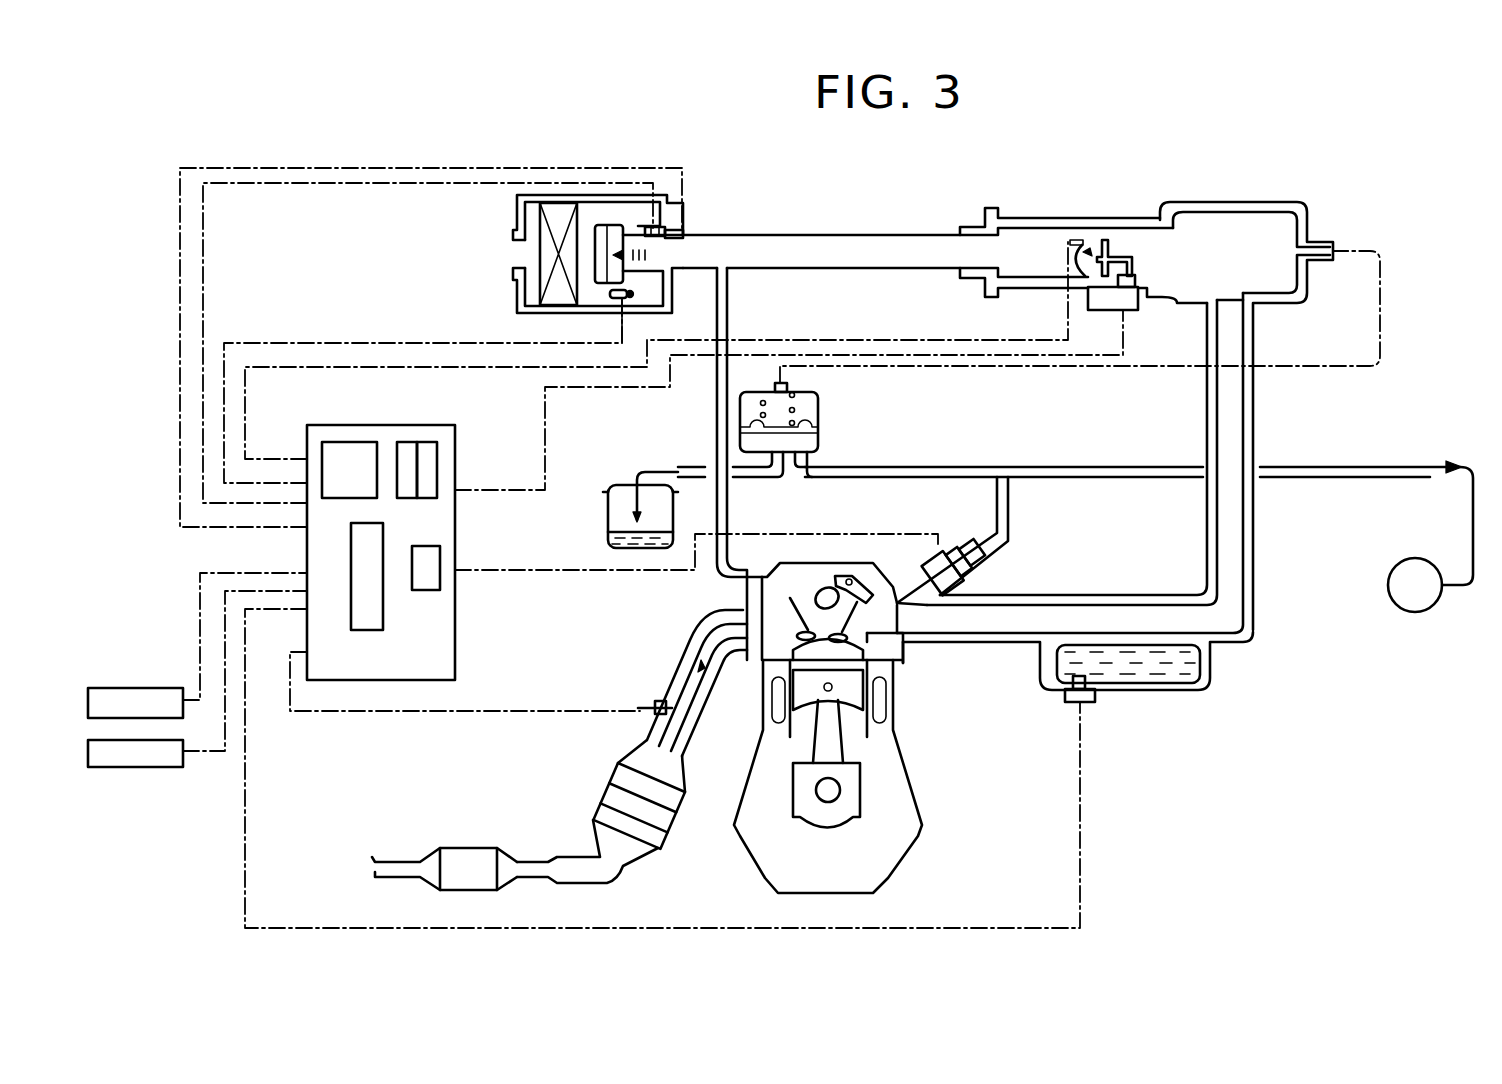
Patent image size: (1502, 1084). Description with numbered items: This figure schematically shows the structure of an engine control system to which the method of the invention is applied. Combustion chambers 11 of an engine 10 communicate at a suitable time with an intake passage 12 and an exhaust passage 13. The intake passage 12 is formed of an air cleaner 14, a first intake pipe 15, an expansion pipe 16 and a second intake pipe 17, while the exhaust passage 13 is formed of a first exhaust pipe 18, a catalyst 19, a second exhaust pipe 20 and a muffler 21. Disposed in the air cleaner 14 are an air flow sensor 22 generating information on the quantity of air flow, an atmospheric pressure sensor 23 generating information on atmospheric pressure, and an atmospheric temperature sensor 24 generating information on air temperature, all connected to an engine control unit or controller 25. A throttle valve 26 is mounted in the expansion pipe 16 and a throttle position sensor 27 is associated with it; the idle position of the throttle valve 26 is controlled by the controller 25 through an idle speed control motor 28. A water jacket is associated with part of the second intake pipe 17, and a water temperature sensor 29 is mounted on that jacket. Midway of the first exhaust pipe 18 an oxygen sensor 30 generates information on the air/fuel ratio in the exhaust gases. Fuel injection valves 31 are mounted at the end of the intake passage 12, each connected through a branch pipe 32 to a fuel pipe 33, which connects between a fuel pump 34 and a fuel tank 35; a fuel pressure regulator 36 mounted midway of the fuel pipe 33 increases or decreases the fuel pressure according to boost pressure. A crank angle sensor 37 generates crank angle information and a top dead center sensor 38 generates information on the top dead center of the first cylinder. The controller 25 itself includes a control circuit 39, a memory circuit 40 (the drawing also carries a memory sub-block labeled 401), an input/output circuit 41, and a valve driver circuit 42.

The engine 10 is at (914, 778).
The combustion chambers 11 is at (873, 662).
The intake passage 12 is at (1044, 630).
The exhaust passage 13 is at (690, 647).
The air cleaner 14 is at (513, 222).
The first intake pipe 15 is at (888, 236).
The expansion pipe 16 is at (1238, 202).
The second intake pipe 17 is at (1120, 596).
The first exhaust pipe 18 is at (712, 612).
The catalyst 19 is at (614, 777).
The second exhaust pipe 20 is at (548, 856).
The muffler 21 is at (470, 850).
The air flow sensor 22 is at (650, 228).
The atmospheric pressure sensor 23 is at (681, 230).
The atmospheric temperature sensor 24 is at (633, 295).
The engine control unit (controller) 25 is at (458, 452).
The throttle valve 26 is at (1105, 240).
The throttle position sensor 27 is at (1068, 240).
The idle speed control motor (ISC motor) 28 is at (1133, 308).
The water temperature sensor 29 is at (1088, 703).
The O2 sensor 30 is at (653, 705).
The fuel injection valves 31 is at (952, 550).
The branch pipe 32 is at (1008, 505).
The fuel pipe 33 is at (1115, 467).
The fuel pump 34 is at (1388, 590).
The fuel tank 35 is at (622, 485).
The fuel pressure regulator 36 is at (820, 442).
The crank angle sensor 37 is at (140, 700).
The top dead center sensor 38 is at (148, 767).
The control circuit 39 is at (350, 440).
The memory circuit 40 is at (408, 442).
The RAM 401 is at (428, 442).
The input/output circuit 41 is at (372, 618).
The valve driver circuit 42 is at (441, 586).